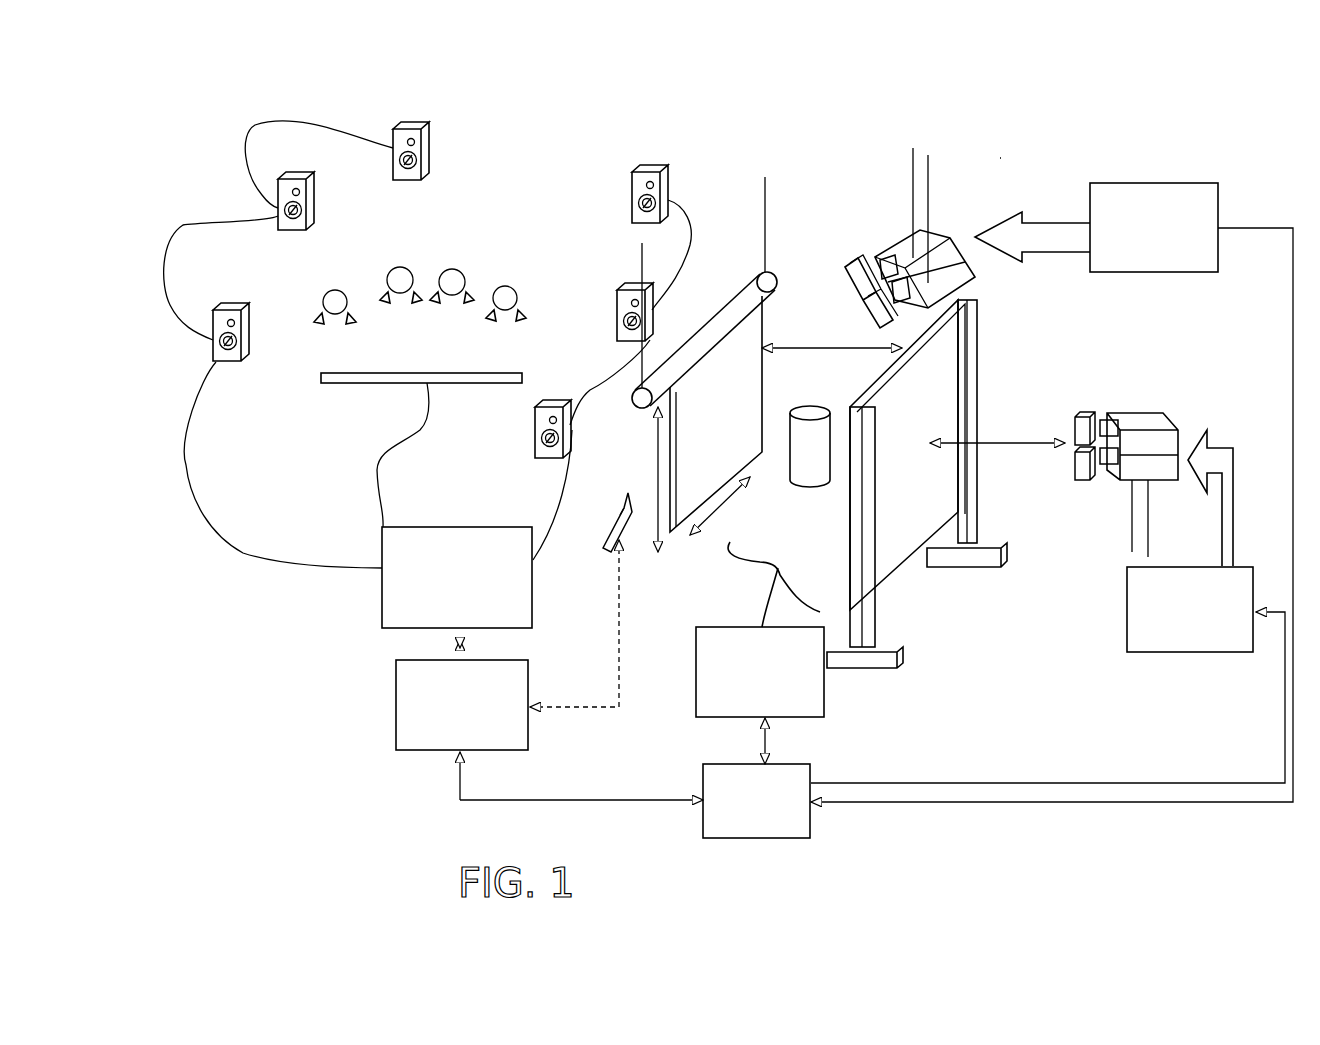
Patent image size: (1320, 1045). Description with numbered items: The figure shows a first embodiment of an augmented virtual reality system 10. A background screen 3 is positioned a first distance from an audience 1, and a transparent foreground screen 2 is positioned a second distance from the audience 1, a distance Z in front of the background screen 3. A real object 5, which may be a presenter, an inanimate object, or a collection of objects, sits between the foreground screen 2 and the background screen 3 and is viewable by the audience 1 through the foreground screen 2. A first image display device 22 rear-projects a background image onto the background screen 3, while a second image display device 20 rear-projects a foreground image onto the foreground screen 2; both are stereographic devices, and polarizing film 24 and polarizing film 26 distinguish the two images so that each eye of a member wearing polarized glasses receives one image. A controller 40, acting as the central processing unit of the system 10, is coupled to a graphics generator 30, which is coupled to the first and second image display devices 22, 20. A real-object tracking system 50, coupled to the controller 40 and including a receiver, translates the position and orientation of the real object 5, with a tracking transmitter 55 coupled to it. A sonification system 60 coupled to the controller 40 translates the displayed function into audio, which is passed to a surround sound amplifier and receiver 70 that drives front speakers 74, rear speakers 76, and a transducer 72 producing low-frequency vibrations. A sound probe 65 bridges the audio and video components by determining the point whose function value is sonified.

The augmented virtual reality system 10 is at (1000, 158).
The audience 1 is at (475, 252).
The transducer 72 is at (473, 384).
The rear speakers 76 is at (343, 112).
The front speakers 74 is at (605, 212).
The surround sound amplifier & receiver 70 is at (533, 602).
The sonification system 60 is at (528, 725).
The sound probe 65 is at (605, 506).
The foreground screen 2 is at (770, 318).
The real object 5 is at (815, 405).
The tracking transmitter 55 is at (760, 580).
The real-object tracking system 50 is at (824, 692).
The controller 40 is at (810, 822).
The graphics generator 30 is at (1180, 273).
The second image display device 20 is at (890, 238).
The polarizing film 24 is at (838, 258).
The background screen 3 is at (983, 350).
The polarizing film 26 is at (1092, 400).
The first image display device 22 is at (1142, 410).